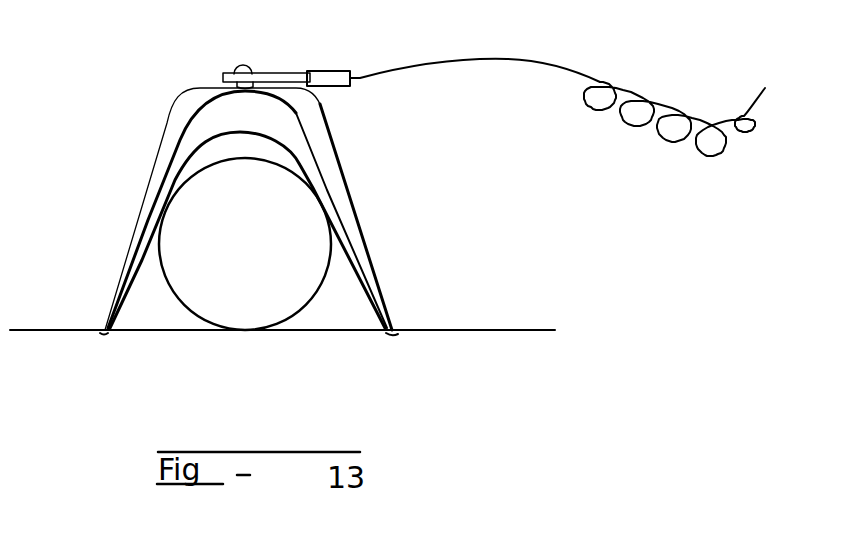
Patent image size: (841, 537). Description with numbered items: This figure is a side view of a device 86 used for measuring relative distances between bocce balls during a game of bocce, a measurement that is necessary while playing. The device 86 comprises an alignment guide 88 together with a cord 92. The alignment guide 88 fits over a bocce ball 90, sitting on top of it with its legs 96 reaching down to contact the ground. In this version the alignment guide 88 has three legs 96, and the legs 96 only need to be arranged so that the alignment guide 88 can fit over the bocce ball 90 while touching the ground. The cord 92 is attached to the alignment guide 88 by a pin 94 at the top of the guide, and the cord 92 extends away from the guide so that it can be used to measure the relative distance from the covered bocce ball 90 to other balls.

The device 86 is at (105, 195).
The alignment guide 88 is at (341, 156).
The bocce ball 90 is at (277, 285).
The cord 92 is at (507, 59).
The pin 94 is at (244, 68).
The legs 96 is at (102, 332).